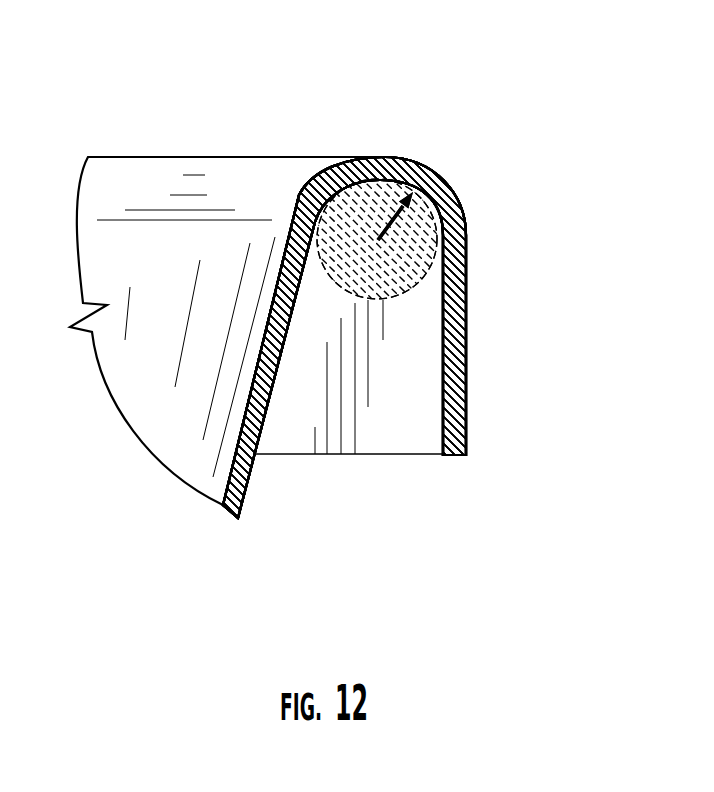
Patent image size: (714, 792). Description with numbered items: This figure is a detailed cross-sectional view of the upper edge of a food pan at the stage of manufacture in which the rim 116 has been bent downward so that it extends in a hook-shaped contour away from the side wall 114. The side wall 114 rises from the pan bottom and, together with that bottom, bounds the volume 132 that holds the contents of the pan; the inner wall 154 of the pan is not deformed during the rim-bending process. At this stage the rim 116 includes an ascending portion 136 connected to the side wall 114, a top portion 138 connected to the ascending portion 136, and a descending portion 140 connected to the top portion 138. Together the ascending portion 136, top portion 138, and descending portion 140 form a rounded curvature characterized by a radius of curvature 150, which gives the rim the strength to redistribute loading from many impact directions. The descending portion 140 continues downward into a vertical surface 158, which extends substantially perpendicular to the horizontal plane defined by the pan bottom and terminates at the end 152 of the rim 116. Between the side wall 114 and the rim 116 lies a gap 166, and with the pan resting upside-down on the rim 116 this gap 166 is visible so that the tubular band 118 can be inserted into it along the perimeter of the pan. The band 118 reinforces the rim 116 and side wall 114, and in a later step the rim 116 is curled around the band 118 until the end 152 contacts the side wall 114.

The side wall 114 is at (247, 497).
The rim 116 is at (420, 170).
The band 118 is at (387, 260).
The volume 132 is at (148, 206).
The ascending portion 136 is at (324, 178).
The top portion 138 is at (388, 158).
The descending portion 140 is at (457, 201).
The radius of curvature 150 is at (388, 222).
The end 152 is at (455, 457).
The inner wall 154 is at (246, 357).
The vertical surface 158 is at (467, 322).
The gap 166 is at (393, 416).